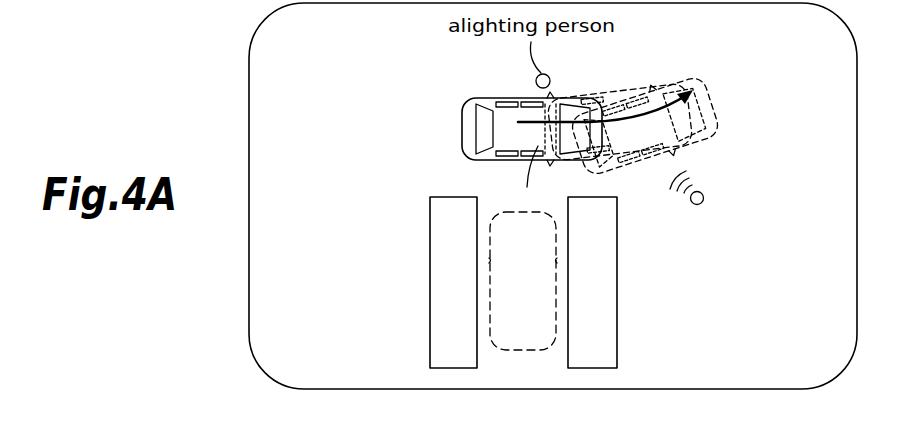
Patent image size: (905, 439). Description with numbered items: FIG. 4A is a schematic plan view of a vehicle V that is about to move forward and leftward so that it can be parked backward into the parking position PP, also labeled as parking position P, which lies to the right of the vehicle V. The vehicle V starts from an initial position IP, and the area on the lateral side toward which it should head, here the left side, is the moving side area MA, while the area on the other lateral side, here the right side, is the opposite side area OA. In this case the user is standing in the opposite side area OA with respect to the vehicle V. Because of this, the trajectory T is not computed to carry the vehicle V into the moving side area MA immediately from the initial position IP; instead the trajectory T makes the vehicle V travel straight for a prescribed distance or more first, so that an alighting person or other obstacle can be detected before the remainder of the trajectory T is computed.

The vehicle V is at (461, 127).
The initial position IP is at (466, 92).
The moving side area MA is at (590, 80).
The trajectory T is at (527, 173).
The parking position P is at (523, 281).
The parking position PP is at (528, 358).
The opposite side area OA is at (603, 183).
The element user is at (704, 193).